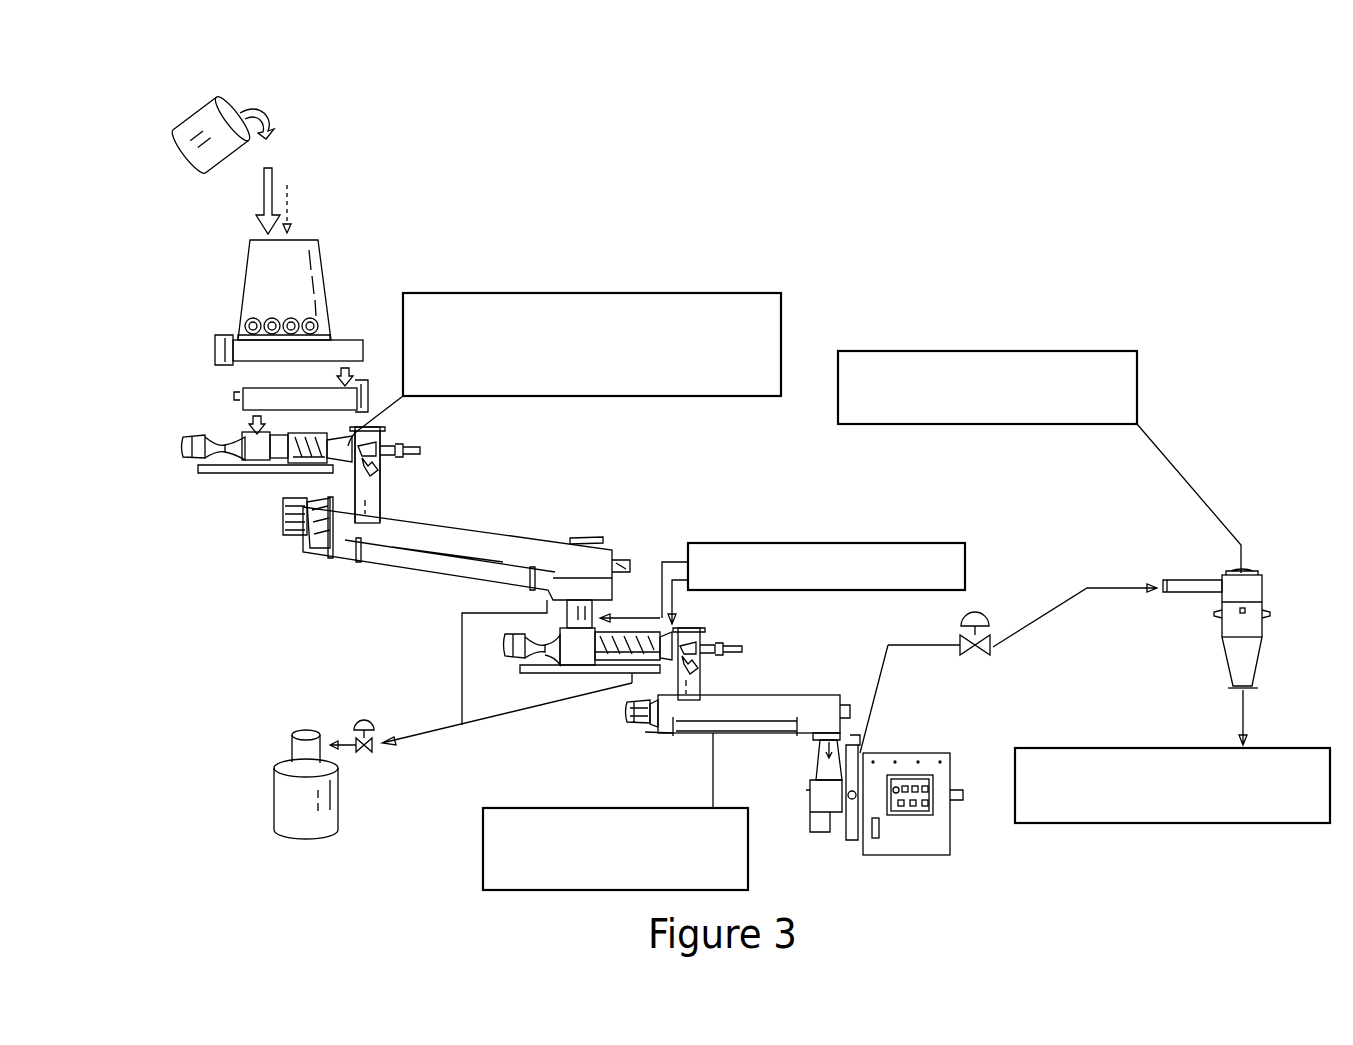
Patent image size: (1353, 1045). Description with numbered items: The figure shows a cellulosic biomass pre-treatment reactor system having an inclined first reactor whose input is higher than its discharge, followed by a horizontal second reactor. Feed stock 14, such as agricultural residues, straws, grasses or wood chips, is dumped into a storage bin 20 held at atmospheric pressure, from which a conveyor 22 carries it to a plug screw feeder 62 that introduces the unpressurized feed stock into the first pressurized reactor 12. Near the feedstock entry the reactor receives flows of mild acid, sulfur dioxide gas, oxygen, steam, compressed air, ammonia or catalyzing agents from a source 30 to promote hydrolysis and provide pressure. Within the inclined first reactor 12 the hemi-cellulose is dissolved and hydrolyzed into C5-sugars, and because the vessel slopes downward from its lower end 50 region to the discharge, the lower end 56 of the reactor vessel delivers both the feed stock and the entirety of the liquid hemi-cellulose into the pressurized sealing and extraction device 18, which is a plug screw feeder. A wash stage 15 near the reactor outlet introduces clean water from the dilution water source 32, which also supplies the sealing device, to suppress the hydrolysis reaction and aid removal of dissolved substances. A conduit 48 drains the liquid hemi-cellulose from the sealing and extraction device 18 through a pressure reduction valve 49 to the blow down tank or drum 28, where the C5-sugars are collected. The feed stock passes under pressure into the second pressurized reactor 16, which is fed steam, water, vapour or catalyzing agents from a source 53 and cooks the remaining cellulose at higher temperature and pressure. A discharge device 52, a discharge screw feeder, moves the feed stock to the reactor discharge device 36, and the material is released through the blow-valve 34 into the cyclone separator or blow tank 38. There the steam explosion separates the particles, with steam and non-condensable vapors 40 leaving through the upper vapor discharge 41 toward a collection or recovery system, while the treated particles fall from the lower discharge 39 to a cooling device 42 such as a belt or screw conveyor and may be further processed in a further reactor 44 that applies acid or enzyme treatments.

The feed stock 14 is at (188, 119).
The storage bin 20 is at (246, 272).
The conveyor 22 is at (190, 336).
The plug screw feeder 62 is at (255, 462).
The source of mild acid, SO2, oxygen, compressed air, ammonia, steam or catalyzing a 30 is at (429, 293).
The first pressurized reactor 12 is at (442, 518).
The lower end of the reactor vessel 56 is at (553, 550).
The wash stage 15 is at (602, 616).
The pressurized sealing and extraction device 18 is at (643, 601).
The dilution water source 32 is at (750, 543).
The lower end of the reactor 50 is at (461, 663).
The conduit 48 is at (509, 722).
The pressure reduction valve 49 is at (369, 760).
The blow down tank or drum 28 is at (275, 810).
The second pressurized reactor 16 is at (673, 733).
The discharge device 52 is at (813, 804).
The reactor discharge device 36 is at (927, 752).
The blow-valve 34 is at (961, 625).
The vapors 40 is at (918, 351).
The upper vapor discharge 41 is at (1200, 490).
The cyclone separator or blow tank 38 is at (1221, 632).
The lower discharge 39 is at (1241, 711).
The cooling device 42 is at (1152, 825).
The further reactor 44 is at (1172, 785).
The source of steam, water, vapour or catalyzing agents 53 is at (483, 876).